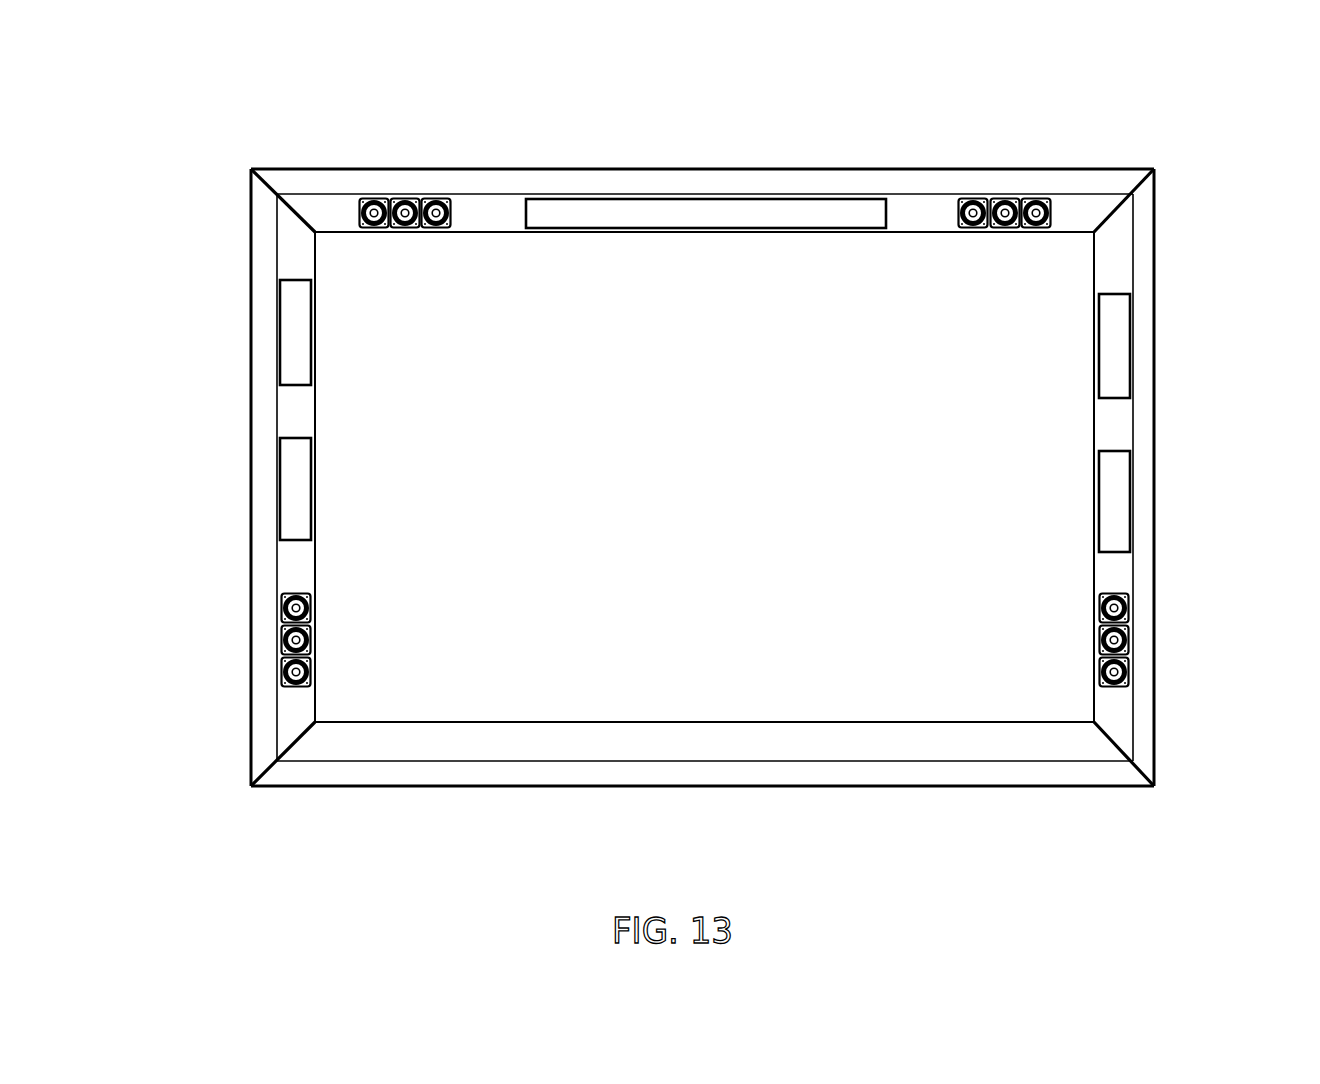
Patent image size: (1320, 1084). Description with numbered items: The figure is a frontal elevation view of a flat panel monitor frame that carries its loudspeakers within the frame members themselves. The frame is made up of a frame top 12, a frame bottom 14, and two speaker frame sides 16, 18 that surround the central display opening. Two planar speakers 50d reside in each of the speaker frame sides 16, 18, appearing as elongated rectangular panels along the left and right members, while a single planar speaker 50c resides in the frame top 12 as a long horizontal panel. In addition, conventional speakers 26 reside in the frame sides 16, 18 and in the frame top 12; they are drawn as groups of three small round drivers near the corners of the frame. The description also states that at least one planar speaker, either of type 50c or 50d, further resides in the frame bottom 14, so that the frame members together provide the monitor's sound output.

The frame top 12 is at (1087, 209).
The frame bottom 14 is at (1004, 747).
The speaker frame side 16 is at (1116, 247).
The speaker frame side 18 is at (299, 237).
The conventional speakers 26 is at (453, 187).
The planar speaker 50c is at (684, 215).
The planar speakers 50d is at (291, 348).